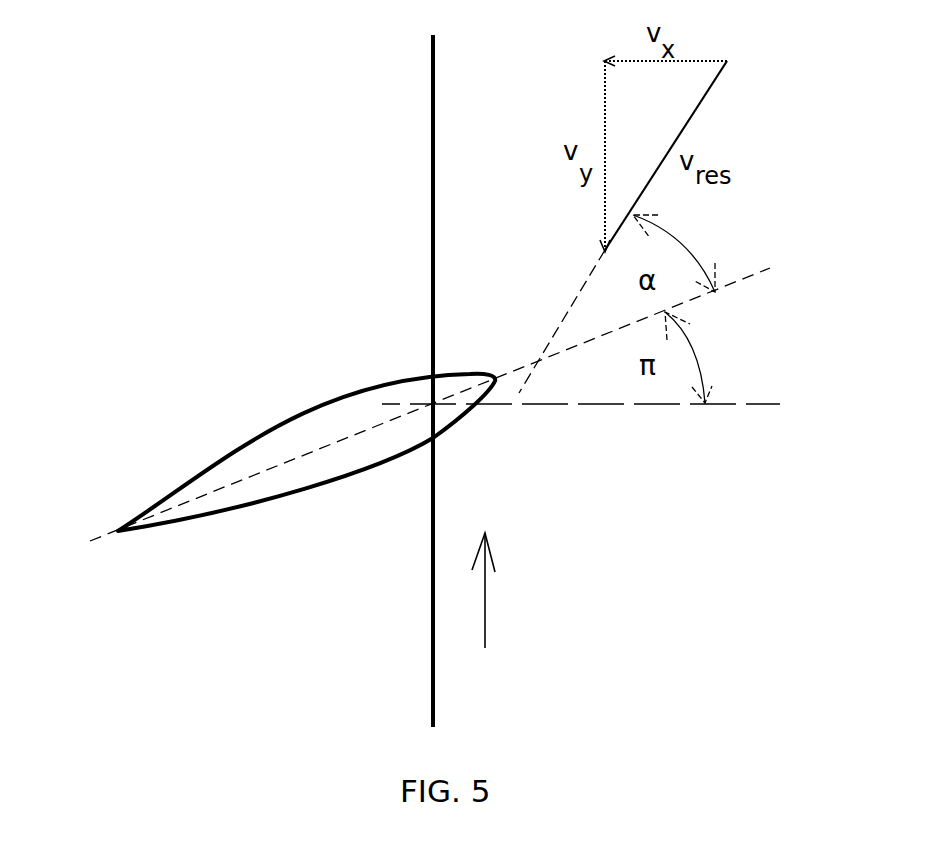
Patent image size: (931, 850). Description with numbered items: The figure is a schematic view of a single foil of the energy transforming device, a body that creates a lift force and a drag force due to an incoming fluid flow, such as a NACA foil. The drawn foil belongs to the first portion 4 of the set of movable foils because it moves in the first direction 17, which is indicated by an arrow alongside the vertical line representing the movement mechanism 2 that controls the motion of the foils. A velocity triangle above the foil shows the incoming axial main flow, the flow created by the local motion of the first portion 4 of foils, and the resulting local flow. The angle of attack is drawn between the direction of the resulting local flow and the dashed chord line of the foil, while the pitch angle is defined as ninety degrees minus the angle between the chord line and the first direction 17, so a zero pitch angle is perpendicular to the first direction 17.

The movement mechanism 2 is at (433, 253).
The first portion of the set of movable foils 4 is at (320, 400).
The first direction 17 is at (505, 590).